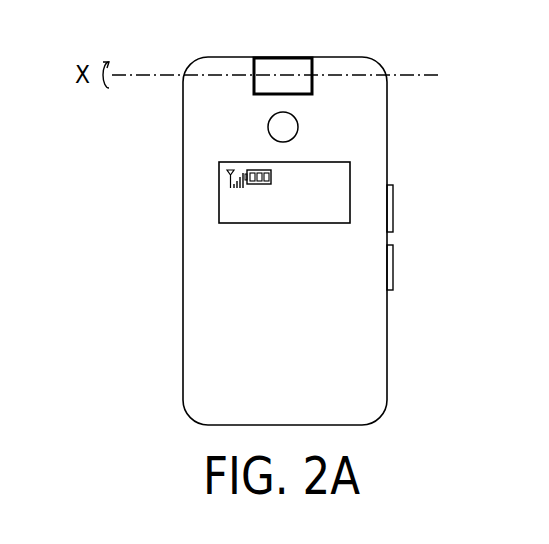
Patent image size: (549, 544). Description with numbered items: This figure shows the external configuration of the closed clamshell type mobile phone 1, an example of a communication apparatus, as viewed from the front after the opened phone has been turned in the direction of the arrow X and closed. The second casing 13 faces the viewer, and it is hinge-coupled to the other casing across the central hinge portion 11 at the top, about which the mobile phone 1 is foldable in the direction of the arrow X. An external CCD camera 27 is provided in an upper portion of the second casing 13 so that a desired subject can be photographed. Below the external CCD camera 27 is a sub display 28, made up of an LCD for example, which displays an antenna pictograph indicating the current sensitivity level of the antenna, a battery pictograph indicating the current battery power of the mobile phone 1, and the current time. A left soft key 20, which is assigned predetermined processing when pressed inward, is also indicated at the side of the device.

The mobile phone 1 is at (406, 346).
The hinge portion 11 is at (290, 66).
The second casing 13 is at (183, 244).
The left soft key 20 is at (394, 268).
The external CCD camera 27 is at (298, 127).
The sub display 28 is at (219, 191).